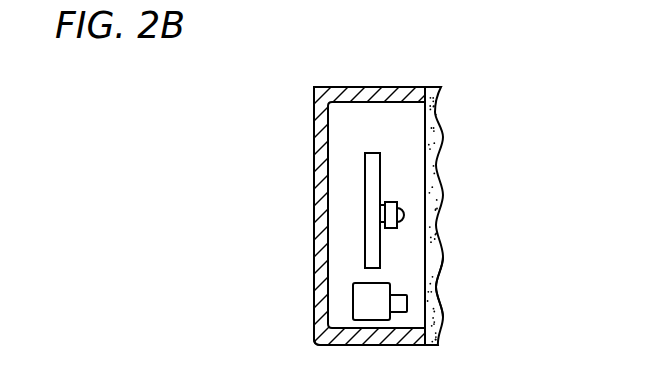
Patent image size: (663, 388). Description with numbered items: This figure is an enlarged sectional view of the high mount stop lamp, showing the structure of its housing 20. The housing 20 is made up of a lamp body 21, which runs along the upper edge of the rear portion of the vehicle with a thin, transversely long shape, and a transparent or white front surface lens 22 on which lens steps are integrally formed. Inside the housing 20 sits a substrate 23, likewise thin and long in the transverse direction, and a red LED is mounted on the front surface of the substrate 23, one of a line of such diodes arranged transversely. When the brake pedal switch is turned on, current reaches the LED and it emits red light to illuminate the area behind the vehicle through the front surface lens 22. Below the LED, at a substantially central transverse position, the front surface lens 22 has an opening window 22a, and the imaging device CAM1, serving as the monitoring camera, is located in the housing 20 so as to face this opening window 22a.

The housing 20 is at (318, 87).
The lamp body 21 is at (314, 295).
The front surface lens 22 is at (443, 143).
The opening window 22a is at (437, 300).
The substrate 23 is at (365, 198).
The light emitting diode LED is at (397, 202).
The imaging device CAM1 is at (374, 308).